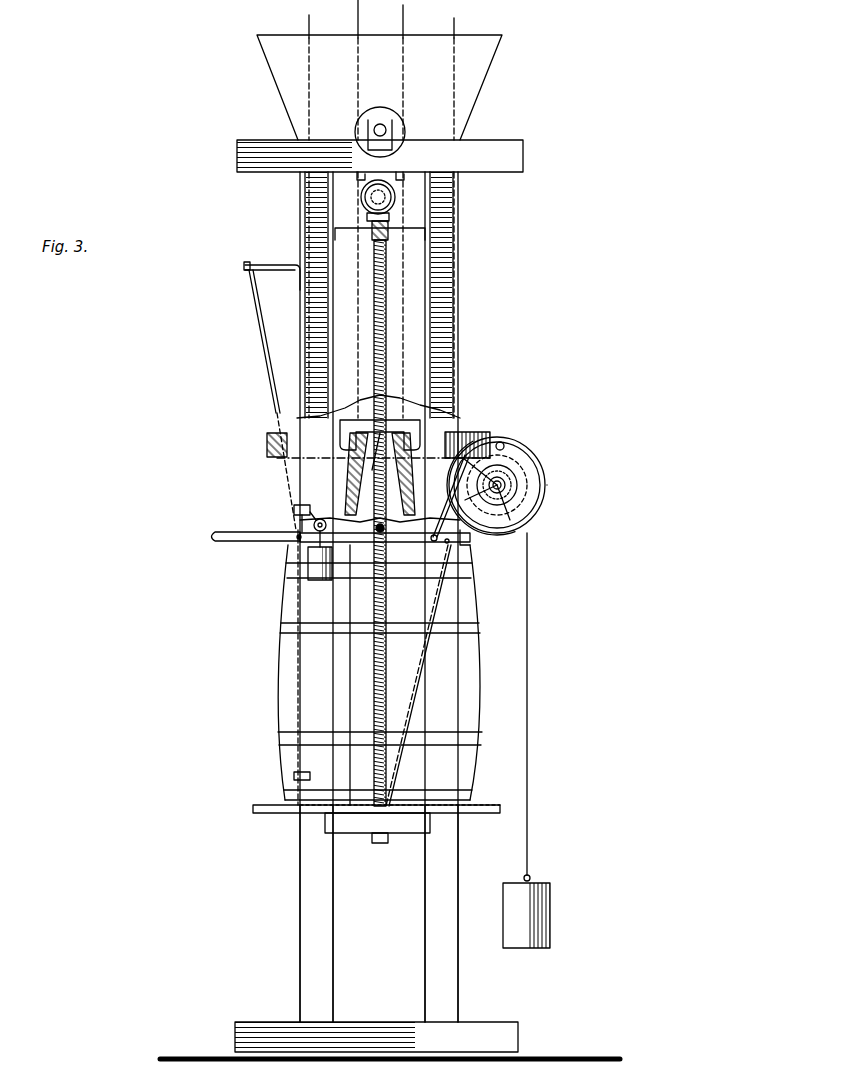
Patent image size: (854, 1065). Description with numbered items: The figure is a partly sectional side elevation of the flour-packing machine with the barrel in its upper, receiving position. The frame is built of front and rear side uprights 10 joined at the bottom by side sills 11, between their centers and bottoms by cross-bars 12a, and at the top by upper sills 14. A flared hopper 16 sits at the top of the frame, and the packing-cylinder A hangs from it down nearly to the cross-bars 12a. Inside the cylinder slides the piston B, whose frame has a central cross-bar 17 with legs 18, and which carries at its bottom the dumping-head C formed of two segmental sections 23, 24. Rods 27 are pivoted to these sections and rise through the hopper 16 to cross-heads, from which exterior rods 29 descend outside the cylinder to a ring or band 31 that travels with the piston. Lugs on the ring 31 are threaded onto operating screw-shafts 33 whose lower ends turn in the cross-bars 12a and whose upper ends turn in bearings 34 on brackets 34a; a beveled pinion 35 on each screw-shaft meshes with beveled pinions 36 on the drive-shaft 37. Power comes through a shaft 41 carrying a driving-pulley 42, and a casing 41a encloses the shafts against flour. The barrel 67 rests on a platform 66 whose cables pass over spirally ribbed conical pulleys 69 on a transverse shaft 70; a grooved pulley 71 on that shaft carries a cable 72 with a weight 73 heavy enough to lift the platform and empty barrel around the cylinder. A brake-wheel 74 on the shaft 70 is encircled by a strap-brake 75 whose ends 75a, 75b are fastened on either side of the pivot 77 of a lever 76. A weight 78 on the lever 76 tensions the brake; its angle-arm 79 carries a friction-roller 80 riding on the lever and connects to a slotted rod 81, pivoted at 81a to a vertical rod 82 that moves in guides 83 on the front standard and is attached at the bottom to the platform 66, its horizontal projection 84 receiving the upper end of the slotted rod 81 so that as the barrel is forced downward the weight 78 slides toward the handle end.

The side uprights 10 is at (299, 898).
The side sills 11 is at (385, 1020).
The cross-bars 12a is at (377, 828).
The upper sills 14 is at (380, 160).
The hopper 16 is at (440, 38).
The central cross-bar 17 is at (378, 457).
The legs 18 is at (432, 440).
The segmental section 23 is at (352, 480).
The segmental section 24 is at (410, 490).
The rods 27 is at (360, 30).
The rods 29 is at (307, 30).
The ring or band 31 is at (266, 444).
The operating screw-shaft 33 is at (388, 303).
The bearings 34 is at (376, 232).
The brackets 34a is at (345, 225).
The beveled pinion 35 is at (390, 216).
The beveled pinions 36 is at (366, 200).
The drive-shaft 37 is at (388, 193).
The shaft 41 is at (381, 124).
The casing 41a is at (395, 155).
The driving-pulley 42 is at (400, 130).
The platform 66 is at (273, 814).
The barrel 67 is at (350, 675).
The conical pulleys 69 is at (501, 442).
The transverse shaft 70 is at (492, 480).
The peripherally-grooved pulley 71 is at (520, 492).
The cable 72 is at (529, 722).
The weight 73 is at (503, 920).
The brake-wheel 74 is at (546, 478).
The strap-brake 75 is at (530, 450).
The brake end 75a is at (470, 546).
The brake end 75b is at (432, 530).
The lever 76 is at (388, 542).
The pivot 77 is at (446, 546).
The weight 78 is at (322, 582).
The angle-arm 79 is at (294, 520).
The friction-roller 80 is at (322, 518).
The slotted rod 81 is at (262, 343).
The pivot point 81a is at (296, 540).
The rod 82 is at (275, 698).
The guides 83 is at (305, 770).
The horizontal projection 84 is at (285, 272).
The packing-cylinder A is at (462, 300).
The piston B is at (395, 404).
The dumping-head C is at (404, 493).